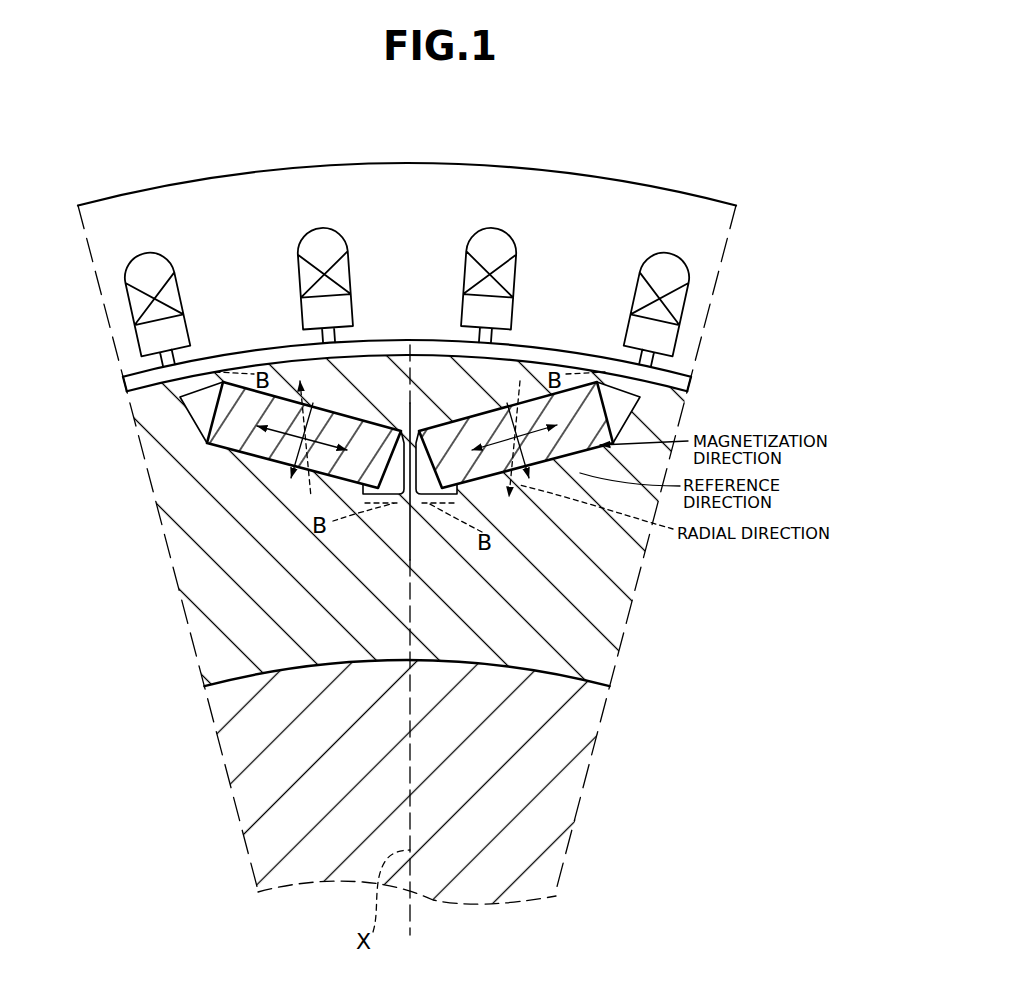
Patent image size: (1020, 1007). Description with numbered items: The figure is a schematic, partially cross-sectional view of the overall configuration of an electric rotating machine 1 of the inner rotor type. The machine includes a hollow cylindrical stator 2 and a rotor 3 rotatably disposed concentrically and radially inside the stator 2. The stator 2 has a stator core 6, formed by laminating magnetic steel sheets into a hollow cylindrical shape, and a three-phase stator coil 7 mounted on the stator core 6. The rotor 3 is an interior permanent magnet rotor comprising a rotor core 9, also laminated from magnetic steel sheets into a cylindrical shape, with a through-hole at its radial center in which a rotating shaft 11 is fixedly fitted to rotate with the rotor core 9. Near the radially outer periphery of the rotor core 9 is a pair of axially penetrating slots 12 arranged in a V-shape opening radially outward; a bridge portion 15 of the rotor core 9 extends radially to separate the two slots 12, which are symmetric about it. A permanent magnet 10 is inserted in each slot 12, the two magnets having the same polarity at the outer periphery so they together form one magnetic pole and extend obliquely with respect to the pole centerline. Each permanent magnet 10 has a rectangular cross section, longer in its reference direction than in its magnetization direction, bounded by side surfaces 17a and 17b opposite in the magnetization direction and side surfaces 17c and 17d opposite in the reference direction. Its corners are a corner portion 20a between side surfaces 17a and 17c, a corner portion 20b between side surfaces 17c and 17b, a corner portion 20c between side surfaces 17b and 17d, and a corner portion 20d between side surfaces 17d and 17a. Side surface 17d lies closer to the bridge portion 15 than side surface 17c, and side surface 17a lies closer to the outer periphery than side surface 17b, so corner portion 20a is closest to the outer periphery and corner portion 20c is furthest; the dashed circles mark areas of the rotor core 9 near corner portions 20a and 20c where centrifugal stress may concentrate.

The electric rotating machine 1 is at (739, 125).
The stator 2 is at (704, 194).
The rotor 3 is at (207, 673).
The stator core 6 is at (625, 206).
The stator coil 7 is at (321, 237).
The rotor core 9 is at (592, 664).
The permanent magnet 10 is at (235, 445).
The rotating shaft 11 is at (565, 738).
The slot 12 is at (500, 375).
The bridge portion 15 is at (380, 505).
The side surface 17a is at (550, 400).
The side surface 17b is at (460, 496).
The side surface 17c is at (640, 400).
The side surface 17d is at (432, 500).
The corner portion 20a is at (640, 392).
The corner portion 20b is at (620, 443).
The corner portion 20c is at (440, 500).
The corner portion 20d is at (410, 345).